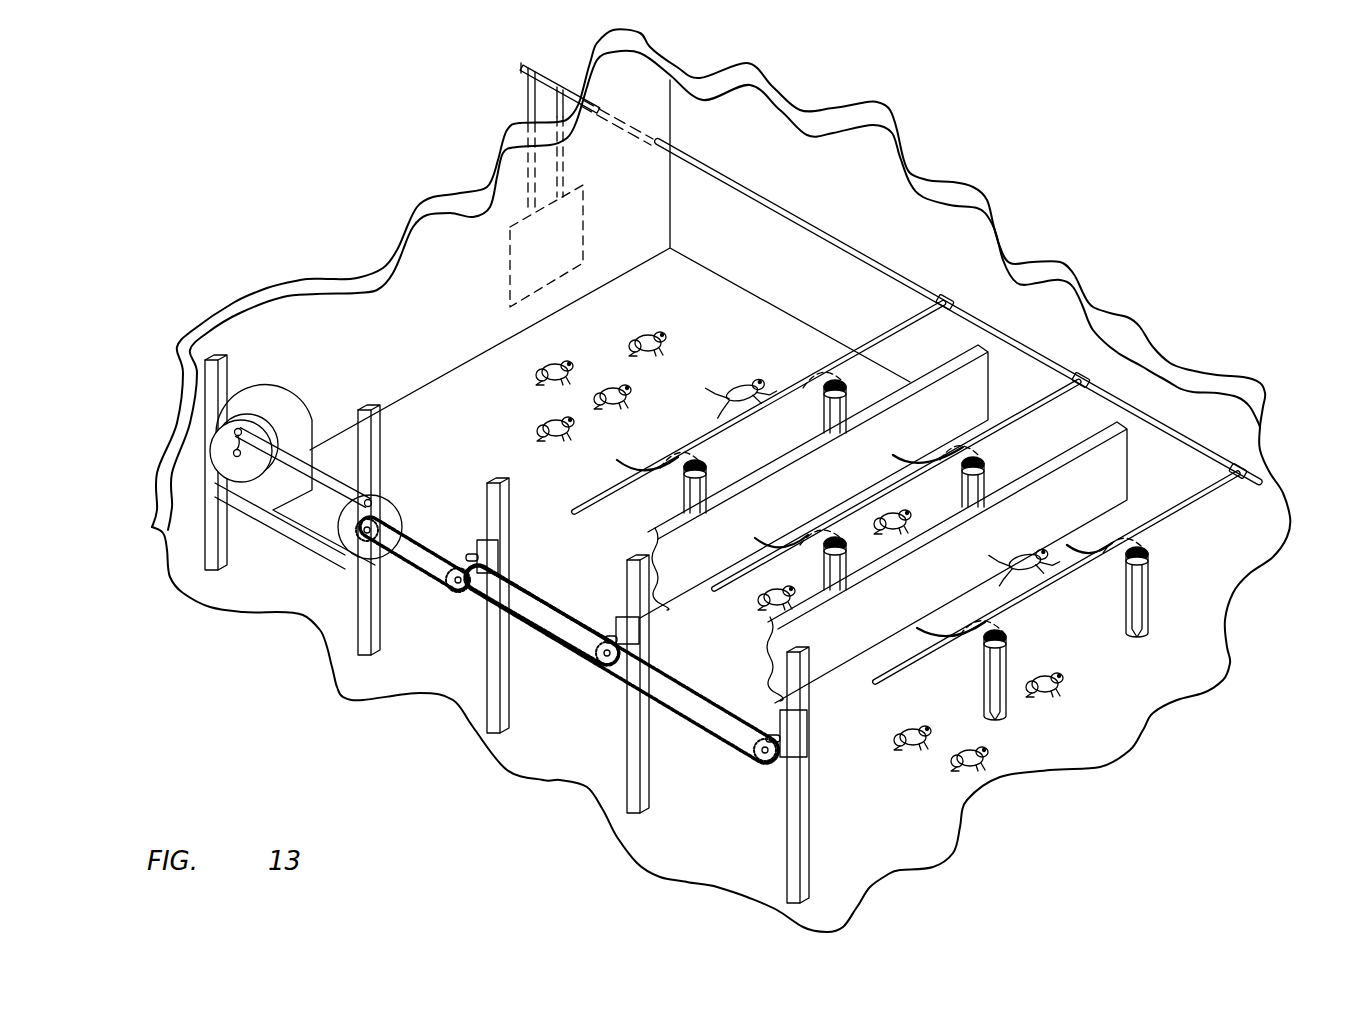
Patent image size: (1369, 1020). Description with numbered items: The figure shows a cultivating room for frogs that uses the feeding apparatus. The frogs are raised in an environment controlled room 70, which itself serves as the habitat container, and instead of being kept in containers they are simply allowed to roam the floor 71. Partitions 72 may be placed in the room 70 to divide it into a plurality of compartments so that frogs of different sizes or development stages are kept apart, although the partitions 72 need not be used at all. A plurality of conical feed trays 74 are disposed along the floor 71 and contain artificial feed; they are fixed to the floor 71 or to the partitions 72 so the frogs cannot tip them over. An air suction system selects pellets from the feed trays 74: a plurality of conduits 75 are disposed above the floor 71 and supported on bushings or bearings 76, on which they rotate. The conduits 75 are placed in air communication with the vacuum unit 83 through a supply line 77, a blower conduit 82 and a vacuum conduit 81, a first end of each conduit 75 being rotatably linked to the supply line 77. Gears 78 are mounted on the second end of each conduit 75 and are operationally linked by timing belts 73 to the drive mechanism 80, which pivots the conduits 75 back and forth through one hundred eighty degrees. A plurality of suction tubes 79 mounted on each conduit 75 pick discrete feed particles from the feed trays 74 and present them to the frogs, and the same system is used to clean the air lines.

The environment controlled room 70 is at (314, 227).
The floor 71 is at (491, 440).
The partitions 72 is at (846, 489).
The timing belts 73 is at (663, 672).
The feed trays 74 is at (908, 455).
The conduits 75 is at (885, 333).
The bushings or bearings 76 is at (516, 588).
The supply line 77 is at (807, 222).
The gears 78 is at (607, 655).
The suction tubes 79 is at (968, 445).
The drive mechanism 80 is at (343, 396).
The vacuum conduit 81 is at (557, 177).
The blower conduit 82 is at (527, 100).
The vacuum unit 83 is at (510, 267).